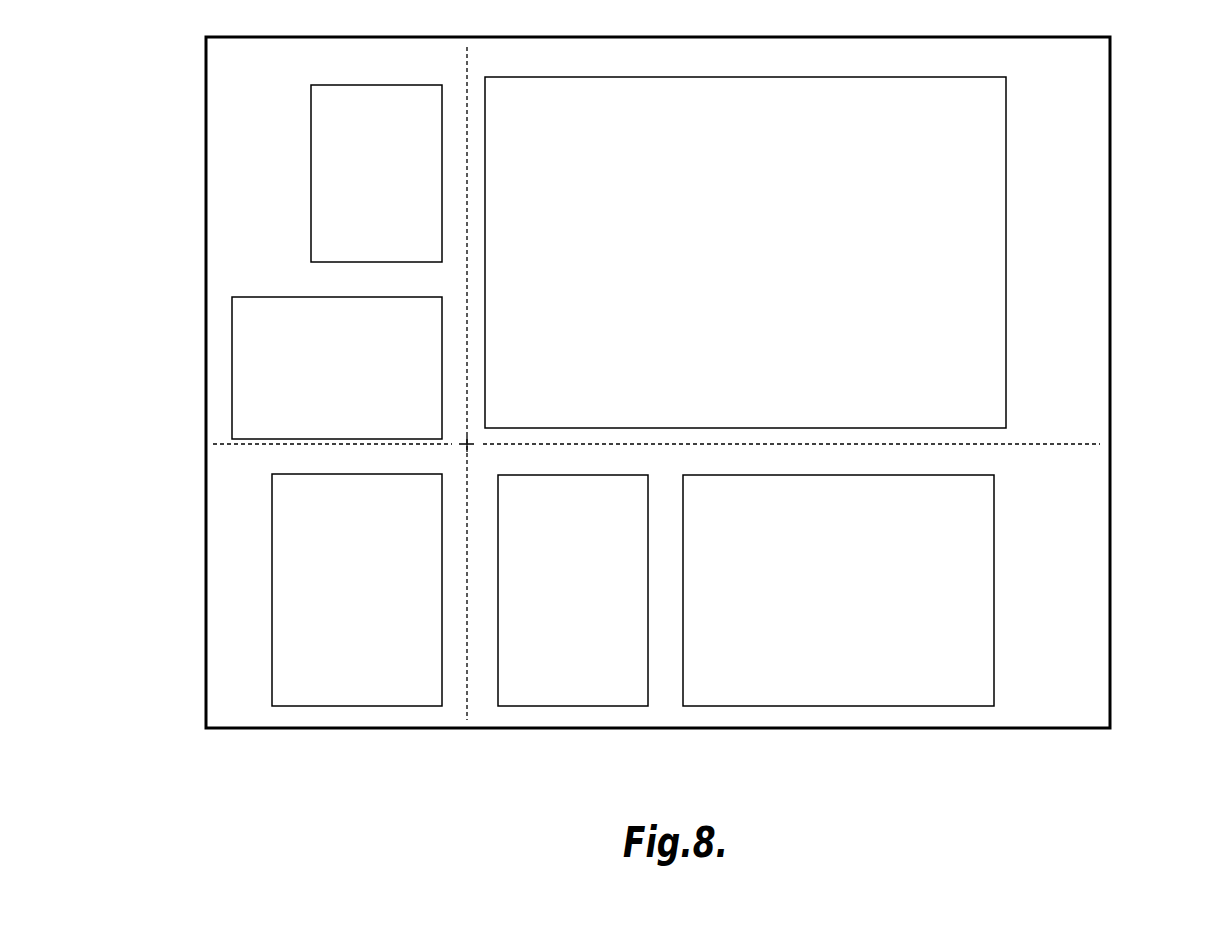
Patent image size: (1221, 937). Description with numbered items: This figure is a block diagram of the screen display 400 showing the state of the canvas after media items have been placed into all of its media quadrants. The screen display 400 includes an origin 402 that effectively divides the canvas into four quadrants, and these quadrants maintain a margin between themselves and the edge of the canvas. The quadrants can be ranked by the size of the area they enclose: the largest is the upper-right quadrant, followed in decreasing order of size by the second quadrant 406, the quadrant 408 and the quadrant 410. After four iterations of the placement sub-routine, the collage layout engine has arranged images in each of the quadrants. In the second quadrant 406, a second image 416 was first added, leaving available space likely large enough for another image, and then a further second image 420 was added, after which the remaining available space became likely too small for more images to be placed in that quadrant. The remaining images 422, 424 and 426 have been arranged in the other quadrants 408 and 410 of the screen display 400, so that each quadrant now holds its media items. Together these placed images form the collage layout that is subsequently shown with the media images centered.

The screen display 400 is at (1111, 385).
The origin 402 is at (525, 66).
The second quadrant 406 is at (1094, 716).
The quadrant 408 is at (240, 73).
The quadrant 410 is at (253, 713).
The second image 416 is at (573, 707).
The second image 420 is at (839, 707).
The image 422 is at (311, 172).
The image 424 is at (232, 370).
The image 426 is at (272, 591).